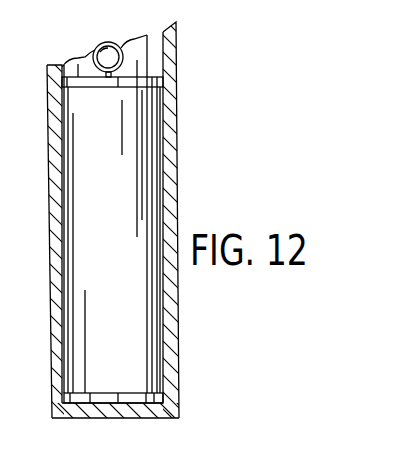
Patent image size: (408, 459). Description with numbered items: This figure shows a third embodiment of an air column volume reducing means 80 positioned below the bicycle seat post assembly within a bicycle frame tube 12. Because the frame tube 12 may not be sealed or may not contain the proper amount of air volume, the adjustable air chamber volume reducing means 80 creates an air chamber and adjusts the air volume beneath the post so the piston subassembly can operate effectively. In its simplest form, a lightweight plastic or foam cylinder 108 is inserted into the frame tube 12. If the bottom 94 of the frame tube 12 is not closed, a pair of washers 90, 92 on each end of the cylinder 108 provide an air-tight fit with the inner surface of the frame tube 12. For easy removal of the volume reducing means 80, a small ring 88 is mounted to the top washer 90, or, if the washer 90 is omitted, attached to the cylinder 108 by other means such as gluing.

The frame tube 12 is at (178, 170).
The adjustable air chamber volume reducing means 80 is at (160, 123).
The small ring 88 is at (103, 44).
The top washer 90 is at (156, 55).
The washer 92 is at (137, 393).
The bottom of the frame tube 94 is at (172, 419).
The lightweight plastic or foam cylinder 108 is at (133, 113).